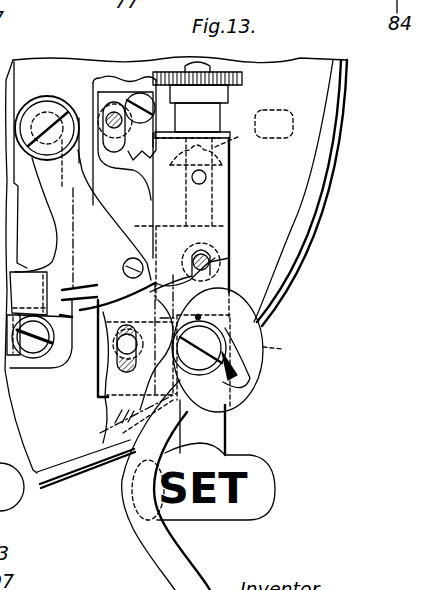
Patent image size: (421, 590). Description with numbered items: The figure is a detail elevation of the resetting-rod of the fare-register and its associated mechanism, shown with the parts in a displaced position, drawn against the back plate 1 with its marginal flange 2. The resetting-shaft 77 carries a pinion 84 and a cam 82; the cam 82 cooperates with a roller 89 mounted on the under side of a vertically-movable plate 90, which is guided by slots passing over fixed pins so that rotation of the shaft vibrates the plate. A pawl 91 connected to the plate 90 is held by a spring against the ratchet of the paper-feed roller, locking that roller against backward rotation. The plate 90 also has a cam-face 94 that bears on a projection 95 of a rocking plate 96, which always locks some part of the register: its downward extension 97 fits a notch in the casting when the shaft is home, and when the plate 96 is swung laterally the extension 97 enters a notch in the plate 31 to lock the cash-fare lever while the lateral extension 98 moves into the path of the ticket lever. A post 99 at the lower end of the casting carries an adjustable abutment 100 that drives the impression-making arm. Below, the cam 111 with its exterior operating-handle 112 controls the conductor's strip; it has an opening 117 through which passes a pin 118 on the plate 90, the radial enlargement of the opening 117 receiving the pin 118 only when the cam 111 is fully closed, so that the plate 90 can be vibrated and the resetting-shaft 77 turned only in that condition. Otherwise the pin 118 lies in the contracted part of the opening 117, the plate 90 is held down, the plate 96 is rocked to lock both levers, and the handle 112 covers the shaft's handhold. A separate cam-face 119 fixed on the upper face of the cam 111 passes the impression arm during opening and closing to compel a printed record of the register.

The back plate 1 is at (176, 265).
The marginal flange 2 is at (333, 147).
The plate 31 is at (36, 215).
The resetting-shaft 77 is at (193, 63).
The cam 82 is at (240, 136).
The pinion 84 is at (234, 71).
The roller 89 is at (206, 176).
The vertically-movable plate 90 is at (220, 210).
The pawl 91 is at (134, 147).
The cam-face 94 is at (153, 284).
The projection 95 is at (127, 262).
The rocking plate 96 is at (108, 215).
The downward extension 97 is at (77, 285).
The lateral extension 98 is at (28, 293).
The post 99 is at (116, 343).
The adjustable abutment 100 is at (118, 358).
The cam 111 is at (190, 313).
The operating-handle 112 is at (159, 545).
The opening 117 is at (237, 375).
The pin 118 is at (222, 292).
The cam-face 119 is at (227, 318).